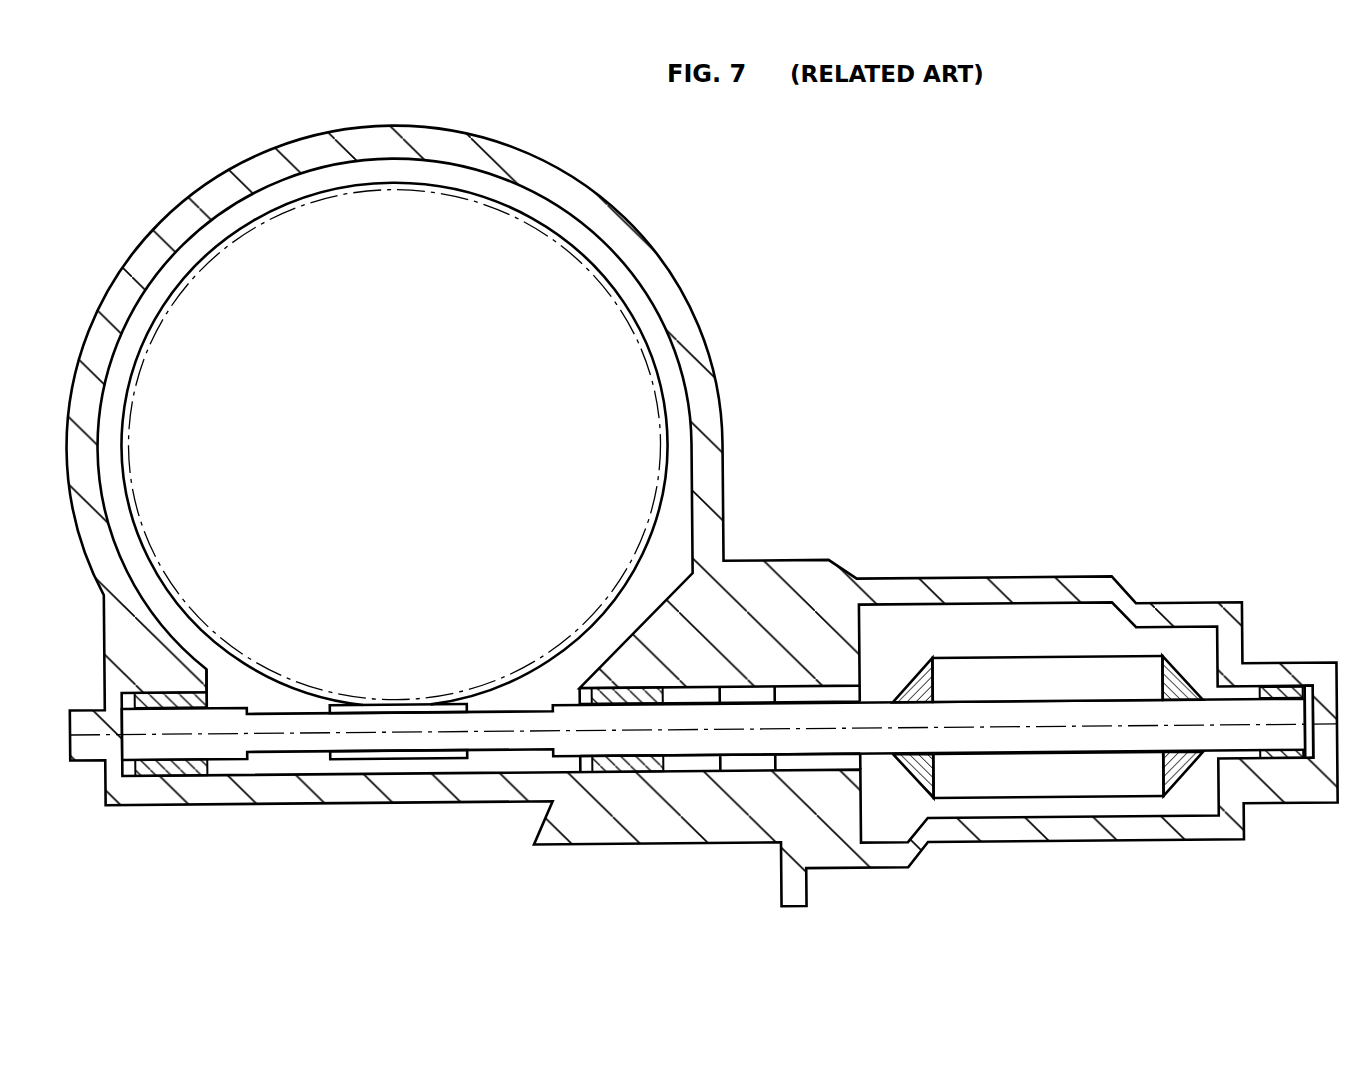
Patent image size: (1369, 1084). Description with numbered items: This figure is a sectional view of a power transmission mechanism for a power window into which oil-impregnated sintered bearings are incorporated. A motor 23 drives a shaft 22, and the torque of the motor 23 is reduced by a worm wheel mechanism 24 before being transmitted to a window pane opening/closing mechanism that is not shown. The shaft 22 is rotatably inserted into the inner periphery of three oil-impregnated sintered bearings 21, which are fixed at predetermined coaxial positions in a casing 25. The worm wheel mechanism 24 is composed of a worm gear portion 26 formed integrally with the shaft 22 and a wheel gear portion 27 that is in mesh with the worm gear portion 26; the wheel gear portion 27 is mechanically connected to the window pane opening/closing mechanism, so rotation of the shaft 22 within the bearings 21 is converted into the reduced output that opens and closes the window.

The oil-impregnated sintered bearing 21 is at (184, 766).
The shaft 22 is at (821, 743).
The motor 23 is at (1065, 672).
The worm wheel mechanism 24 is at (531, 693).
The casing 25 is at (795, 573).
The worm gear portion 26 is at (386, 756).
The wheel gear portion 27 is at (578, 306).